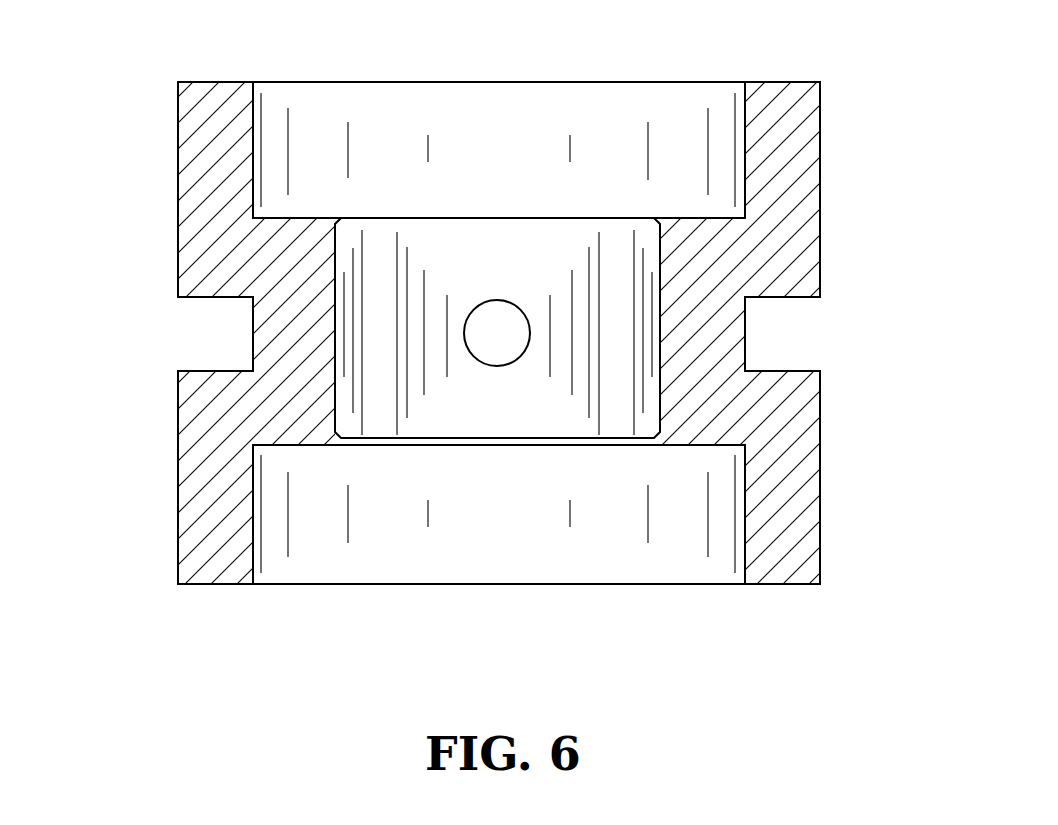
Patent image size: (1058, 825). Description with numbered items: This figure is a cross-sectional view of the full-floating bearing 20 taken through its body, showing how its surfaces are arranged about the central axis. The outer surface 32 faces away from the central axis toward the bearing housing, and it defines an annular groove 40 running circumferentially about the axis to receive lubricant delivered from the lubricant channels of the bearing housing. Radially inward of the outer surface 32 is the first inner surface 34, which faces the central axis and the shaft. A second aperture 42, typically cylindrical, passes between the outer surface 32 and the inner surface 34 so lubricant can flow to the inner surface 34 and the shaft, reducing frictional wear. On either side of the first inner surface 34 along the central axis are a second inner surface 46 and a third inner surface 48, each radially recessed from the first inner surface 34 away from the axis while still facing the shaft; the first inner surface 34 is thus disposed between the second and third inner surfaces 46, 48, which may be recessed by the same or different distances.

The full-floating bearing 20 is at (114, 117).
The outer surface 32 is at (820, 478).
The inner surface 34 is at (377, 407).
The annular groove 40 is at (792, 336).
The second aperture 42 is at (494, 326).
The second inner surface 46 is at (667, 540).
The third inner surface 48 is at (677, 128).